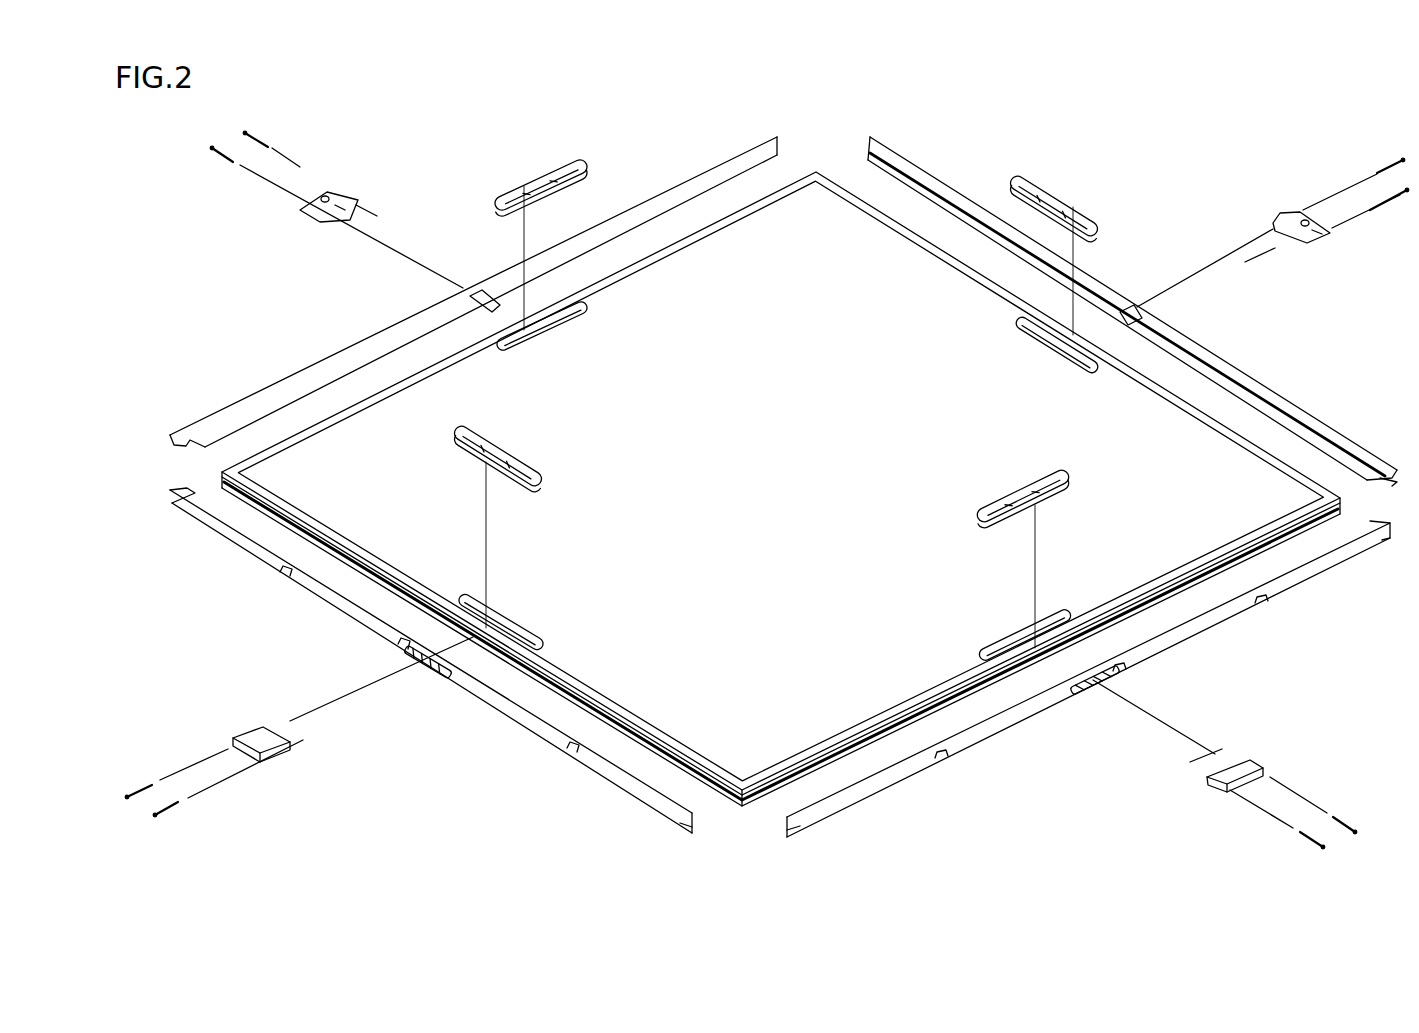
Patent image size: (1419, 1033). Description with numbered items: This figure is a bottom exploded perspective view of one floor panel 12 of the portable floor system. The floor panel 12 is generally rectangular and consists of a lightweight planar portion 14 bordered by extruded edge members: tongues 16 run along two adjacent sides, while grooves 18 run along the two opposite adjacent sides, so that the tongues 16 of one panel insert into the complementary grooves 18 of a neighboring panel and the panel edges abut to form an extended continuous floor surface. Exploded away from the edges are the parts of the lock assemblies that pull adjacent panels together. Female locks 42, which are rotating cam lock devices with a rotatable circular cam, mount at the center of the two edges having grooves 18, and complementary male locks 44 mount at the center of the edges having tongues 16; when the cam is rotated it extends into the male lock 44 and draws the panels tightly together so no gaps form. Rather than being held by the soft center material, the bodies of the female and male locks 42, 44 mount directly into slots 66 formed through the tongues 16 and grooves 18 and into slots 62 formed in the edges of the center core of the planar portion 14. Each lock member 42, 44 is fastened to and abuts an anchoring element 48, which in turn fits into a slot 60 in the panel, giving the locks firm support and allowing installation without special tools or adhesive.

The floor panel 12 is at (1145, 145).
The planar portion 14 is at (813, 217).
The tongue 16 is at (788, 832).
The groove 18 is at (263, 397).
The female lock 42 is at (343, 197).
The male lock 44 is at (247, 733).
The anchoring element 48 is at (567, 175).
The slot 60 is at (580, 313).
The slot 62 is at (507, 653).
The slot 66 is at (477, 300).